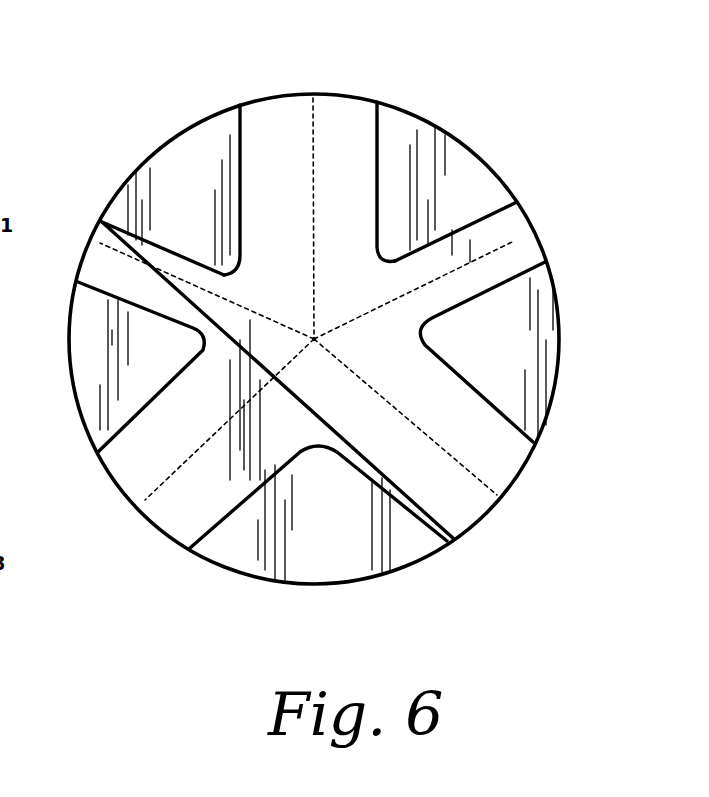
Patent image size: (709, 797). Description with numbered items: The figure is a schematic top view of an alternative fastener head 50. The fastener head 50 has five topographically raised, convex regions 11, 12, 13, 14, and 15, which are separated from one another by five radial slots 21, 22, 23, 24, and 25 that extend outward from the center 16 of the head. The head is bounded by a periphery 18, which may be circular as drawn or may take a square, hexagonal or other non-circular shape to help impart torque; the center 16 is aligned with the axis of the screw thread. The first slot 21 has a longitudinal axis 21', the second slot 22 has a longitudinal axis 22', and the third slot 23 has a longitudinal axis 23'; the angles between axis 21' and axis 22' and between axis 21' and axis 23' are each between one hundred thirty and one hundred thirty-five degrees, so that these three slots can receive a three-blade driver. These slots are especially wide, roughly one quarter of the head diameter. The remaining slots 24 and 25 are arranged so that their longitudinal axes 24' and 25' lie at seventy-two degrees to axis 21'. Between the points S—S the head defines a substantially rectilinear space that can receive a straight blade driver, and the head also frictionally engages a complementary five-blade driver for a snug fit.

The topographically raised region 11 is at (522, 337).
The topographically raised region 12 is at (327, 555).
The topographically raised region 13 is at (97, 328).
The topographically raised region 14 is at (167, 168).
The topographically raised region 15 is at (450, 165).
The center 16 is at (314, 339).
The periphery 18 is at (480, 157).
The first slot 21 is at (330, 156).
The longitudinal axis 21' is at (343, 180).
The second slot 22 is at (171, 458).
The longitudinal axis 22' is at (183, 425).
The third slot 23 is at (321, 415).
The longitudinal axis 23' is at (459, 420).
The slot 24 is at (112, 250).
The longitudinal axis 24' is at (176, 249).
The slot 25 is at (506, 226).
The longitudinal axis 25' is at (450, 251).
The fastener head 50 is at (205, 600).
The point S is at (540, 262).